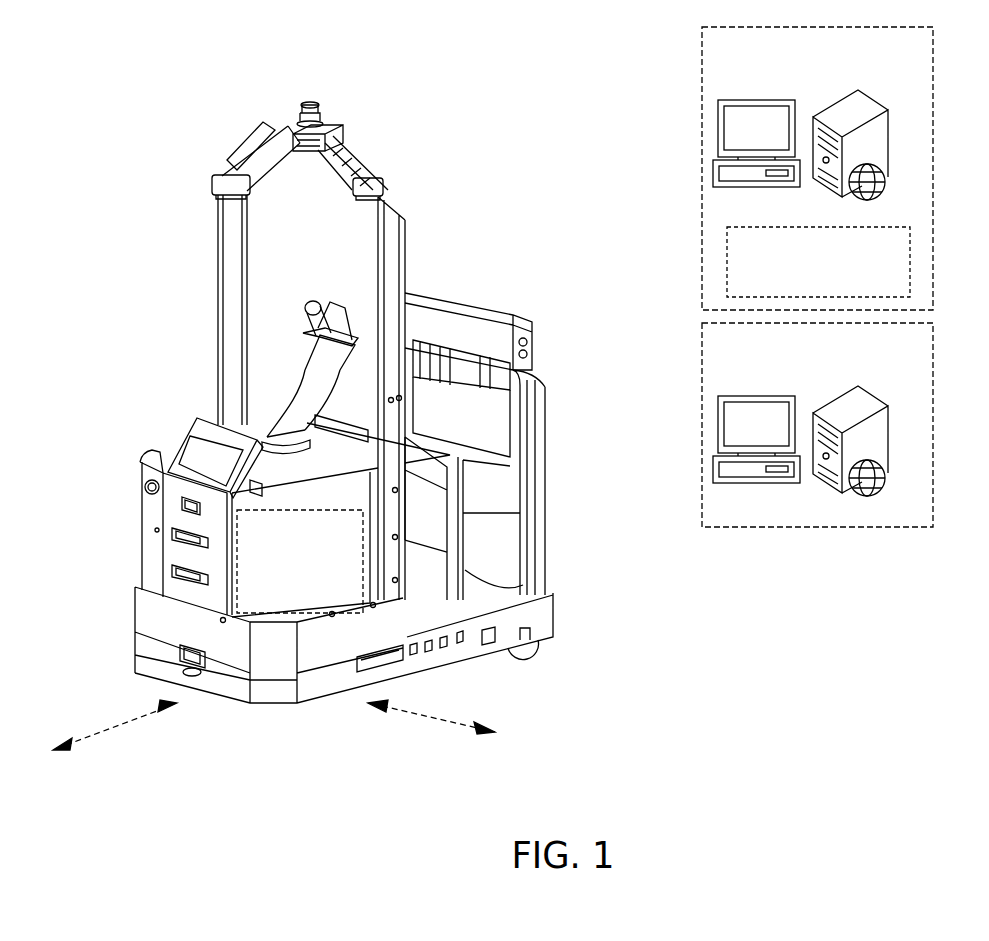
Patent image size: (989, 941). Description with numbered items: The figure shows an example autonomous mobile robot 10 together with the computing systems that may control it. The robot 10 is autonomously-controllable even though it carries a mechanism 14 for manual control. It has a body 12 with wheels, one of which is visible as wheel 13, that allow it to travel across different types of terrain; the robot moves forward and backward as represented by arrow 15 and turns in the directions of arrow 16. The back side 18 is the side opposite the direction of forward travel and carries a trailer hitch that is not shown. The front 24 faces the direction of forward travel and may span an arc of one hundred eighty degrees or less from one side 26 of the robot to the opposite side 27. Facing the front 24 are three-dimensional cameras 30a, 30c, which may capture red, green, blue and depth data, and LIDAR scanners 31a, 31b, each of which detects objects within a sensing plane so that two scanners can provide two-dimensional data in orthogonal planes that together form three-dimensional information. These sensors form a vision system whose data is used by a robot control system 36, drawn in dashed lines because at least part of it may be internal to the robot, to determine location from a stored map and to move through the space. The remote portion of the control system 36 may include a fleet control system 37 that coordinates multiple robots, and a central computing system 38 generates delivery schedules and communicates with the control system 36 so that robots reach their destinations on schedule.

The robot 10 is at (130, 258).
The body 12 is at (190, 642).
The wheel 13 is at (533, 655).
The mechanism for manual control 14 is at (333, 307).
The arrow 15 is at (105, 738).
The arrow 16 is at (453, 725).
The back side 18 is at (545, 565).
The front 24 is at (147, 630).
The side 26 is at (148, 482).
The opposite side 27 is at (310, 655).
The 3D camera 30a is at (175, 533).
The 3D camera 30c is at (214, 183).
The LIDAR scanner 31a is at (175, 570).
The LIDAR scanner 31b is at (290, 128).
The robot control system 36 is at (357, 573).
The fleet control system 37 is at (727, 258).
The central computing system 38 is at (702, 413).